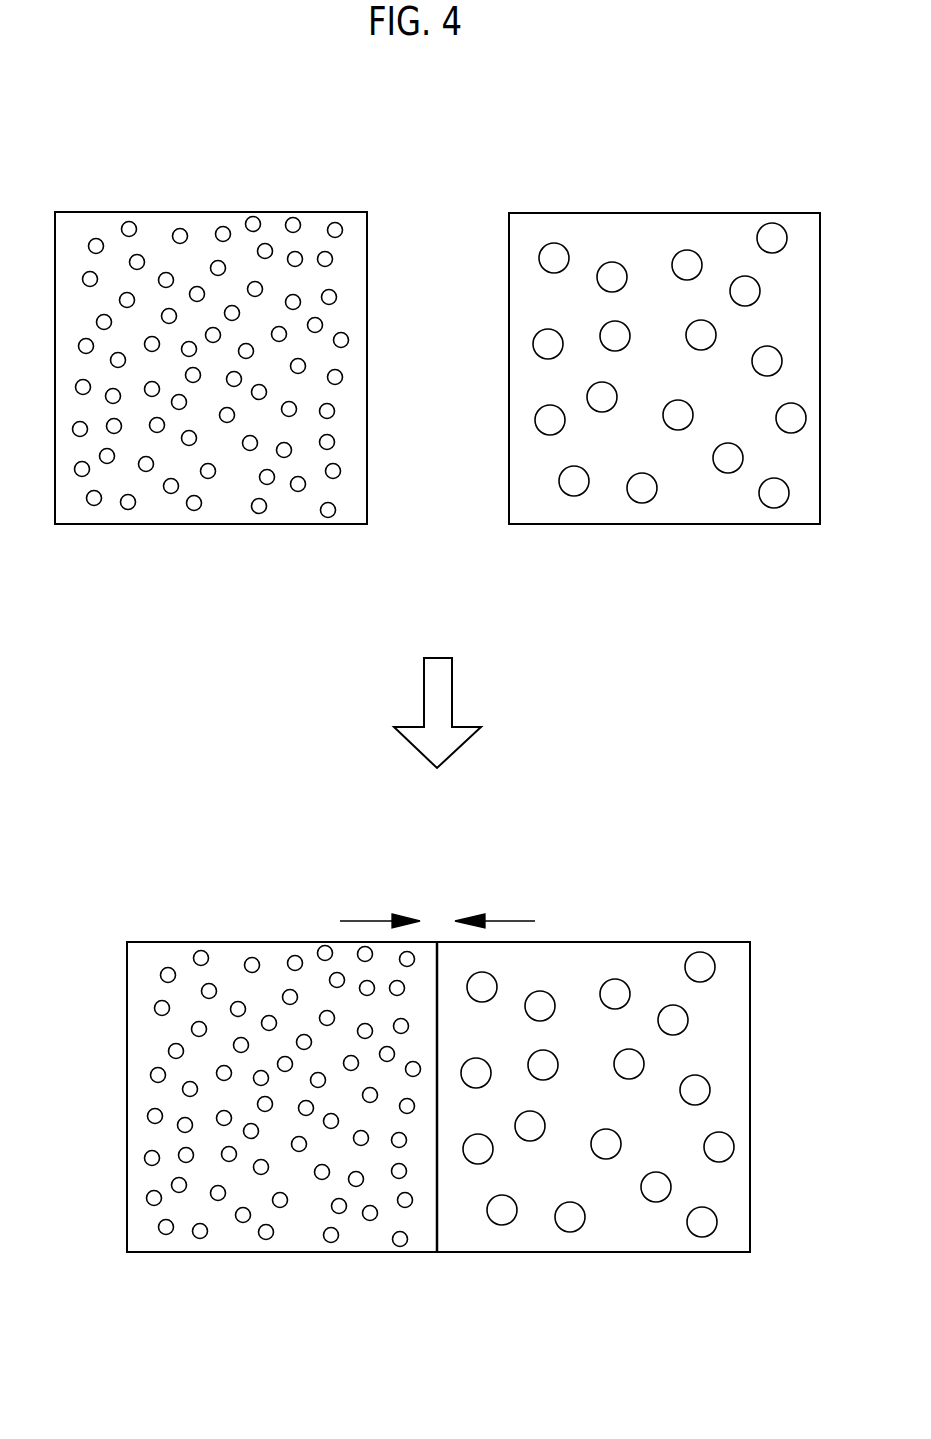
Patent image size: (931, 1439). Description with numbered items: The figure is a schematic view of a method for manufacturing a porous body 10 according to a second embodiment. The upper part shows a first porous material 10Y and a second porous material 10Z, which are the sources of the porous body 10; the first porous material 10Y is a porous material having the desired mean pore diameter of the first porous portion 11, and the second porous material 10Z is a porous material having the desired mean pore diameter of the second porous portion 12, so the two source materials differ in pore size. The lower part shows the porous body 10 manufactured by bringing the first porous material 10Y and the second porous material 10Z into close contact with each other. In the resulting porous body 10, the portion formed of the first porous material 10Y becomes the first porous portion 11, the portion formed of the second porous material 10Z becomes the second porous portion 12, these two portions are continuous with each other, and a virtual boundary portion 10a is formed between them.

The first porous material 10Y is at (219, 142).
The second porous material 10Z is at (675, 142).
The porous body 10 is at (604, 868).
The virtual boundary portion 10a is at (438, 968).
The first porous portion 11 is at (433, 1274).
The second porous portion 12 is at (750, 1274).